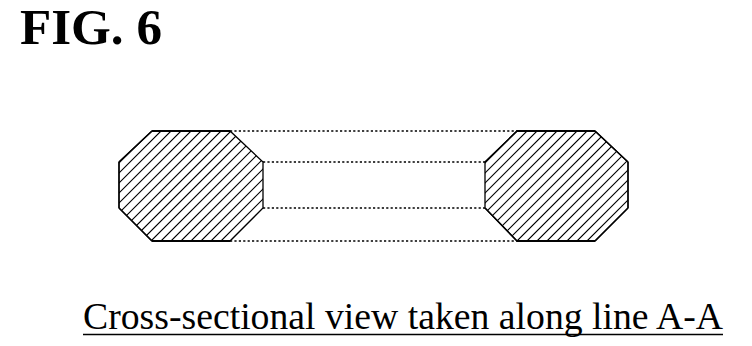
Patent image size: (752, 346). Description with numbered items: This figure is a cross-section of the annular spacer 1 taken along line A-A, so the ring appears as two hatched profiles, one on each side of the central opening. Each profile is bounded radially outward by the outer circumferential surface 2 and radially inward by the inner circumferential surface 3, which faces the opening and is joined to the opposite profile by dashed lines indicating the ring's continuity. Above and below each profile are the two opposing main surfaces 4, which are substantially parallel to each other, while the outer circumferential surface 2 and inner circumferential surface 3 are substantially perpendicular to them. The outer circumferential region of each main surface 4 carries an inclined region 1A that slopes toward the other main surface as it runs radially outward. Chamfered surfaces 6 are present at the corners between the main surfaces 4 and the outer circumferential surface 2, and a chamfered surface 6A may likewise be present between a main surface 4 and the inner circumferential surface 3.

The spacer 1 is at (430, 110).
The inclined region 1A is at (177, 131).
The outer circumferential surface 2 is at (117, 192).
The inner circumferential surface 3 is at (267, 183).
The main surfaces 4 is at (207, 131).
The chamfered surfaces 6 is at (137, 148).
The chamfered surface 6A is at (500, 147).